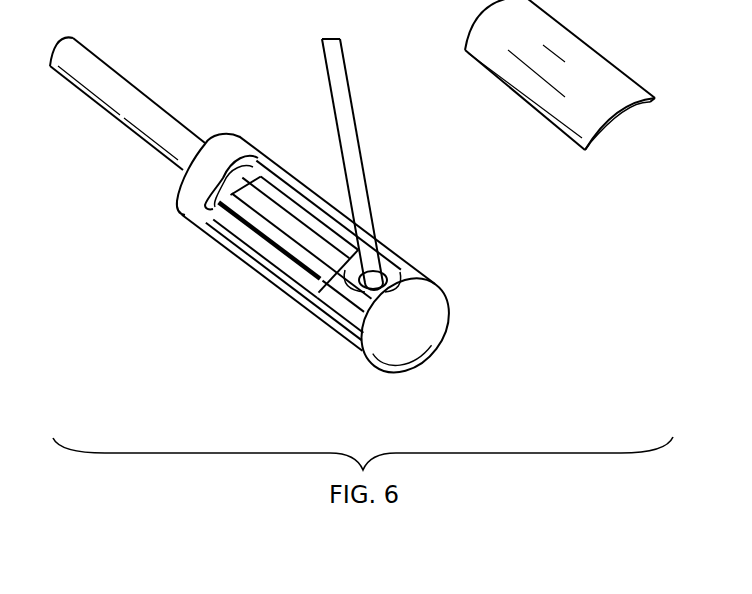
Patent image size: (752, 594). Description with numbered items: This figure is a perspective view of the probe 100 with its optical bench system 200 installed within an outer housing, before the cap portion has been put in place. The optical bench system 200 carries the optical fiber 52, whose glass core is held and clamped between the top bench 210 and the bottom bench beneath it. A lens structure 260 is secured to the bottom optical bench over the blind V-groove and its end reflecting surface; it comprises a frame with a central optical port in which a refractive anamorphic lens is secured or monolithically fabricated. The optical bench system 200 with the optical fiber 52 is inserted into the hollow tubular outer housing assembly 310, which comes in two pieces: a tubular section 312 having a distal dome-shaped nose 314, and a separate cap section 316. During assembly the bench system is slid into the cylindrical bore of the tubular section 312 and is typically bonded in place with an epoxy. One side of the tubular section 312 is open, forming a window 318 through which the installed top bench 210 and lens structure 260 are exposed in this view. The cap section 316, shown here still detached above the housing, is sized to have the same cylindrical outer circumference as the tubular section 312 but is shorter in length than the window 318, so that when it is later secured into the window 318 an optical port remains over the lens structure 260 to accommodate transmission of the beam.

The optical fiber 52 is at (143, 130).
The probe 100 is at (205, 362).
The optical bench system 200 is at (274, 266).
The top bench 210 is at (269, 232).
The lens structure 260 is at (412, 278).
The outer housing assembly 310 is at (343, 370).
The tubular section 312 is at (283, 298).
The distal dome-shaped nose 314 is at (428, 340).
The cap section 316 is at (605, 82).
The window 318 is at (348, 317).